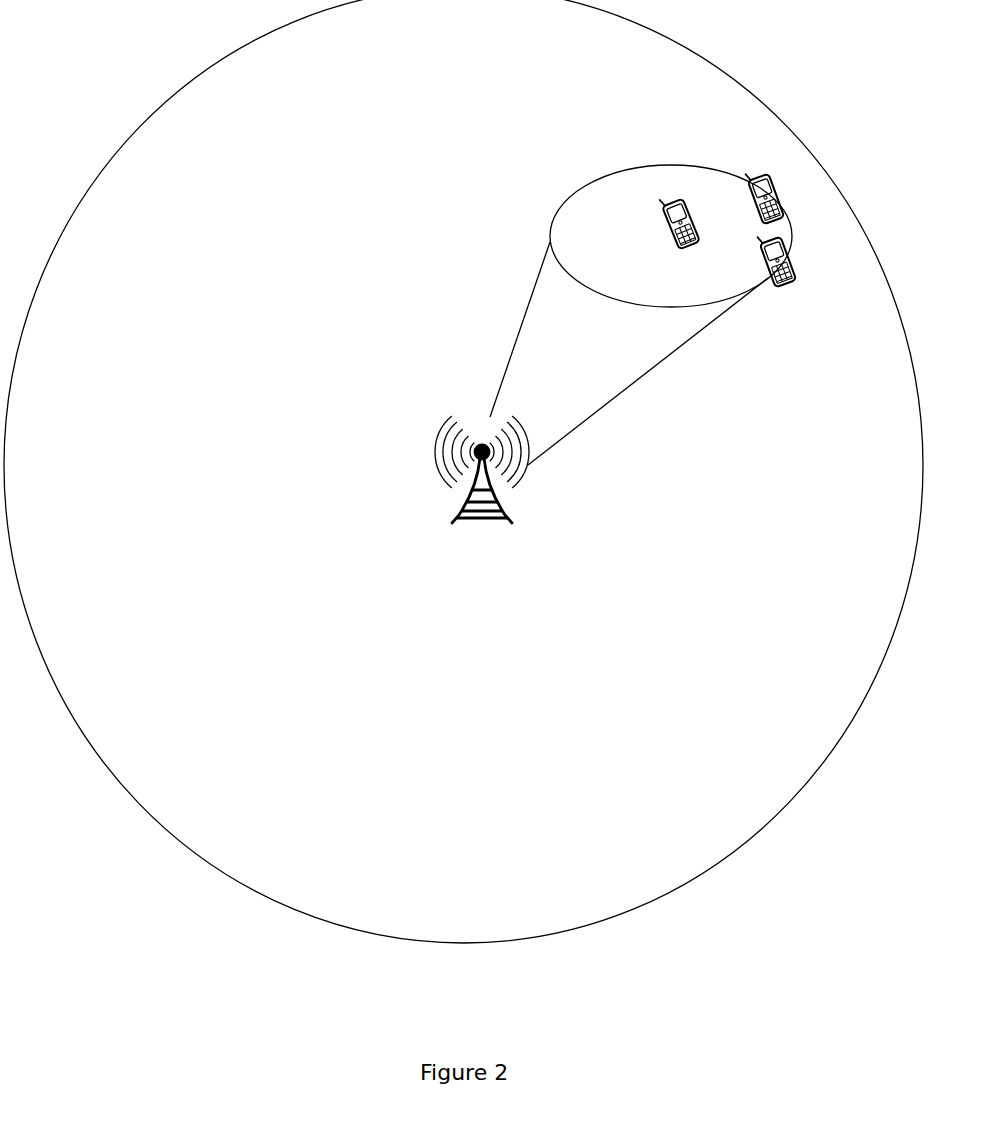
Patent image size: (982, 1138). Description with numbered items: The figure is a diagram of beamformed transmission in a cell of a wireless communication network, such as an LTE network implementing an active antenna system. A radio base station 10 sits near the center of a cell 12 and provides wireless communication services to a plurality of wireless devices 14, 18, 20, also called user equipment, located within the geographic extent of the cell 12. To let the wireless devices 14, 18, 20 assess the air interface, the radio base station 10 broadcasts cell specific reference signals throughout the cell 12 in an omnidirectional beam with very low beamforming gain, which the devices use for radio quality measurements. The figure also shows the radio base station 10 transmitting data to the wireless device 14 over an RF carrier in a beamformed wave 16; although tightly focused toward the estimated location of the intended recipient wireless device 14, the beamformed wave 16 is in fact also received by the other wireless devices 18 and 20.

The radio base station 10 is at (440, 505).
The cell 12 is at (130, 135).
The wireless device 14 is at (668, 233).
The beamformed wave 16 is at (650, 370).
The wireless device 18 is at (784, 207).
The wireless device 20 is at (798, 277).